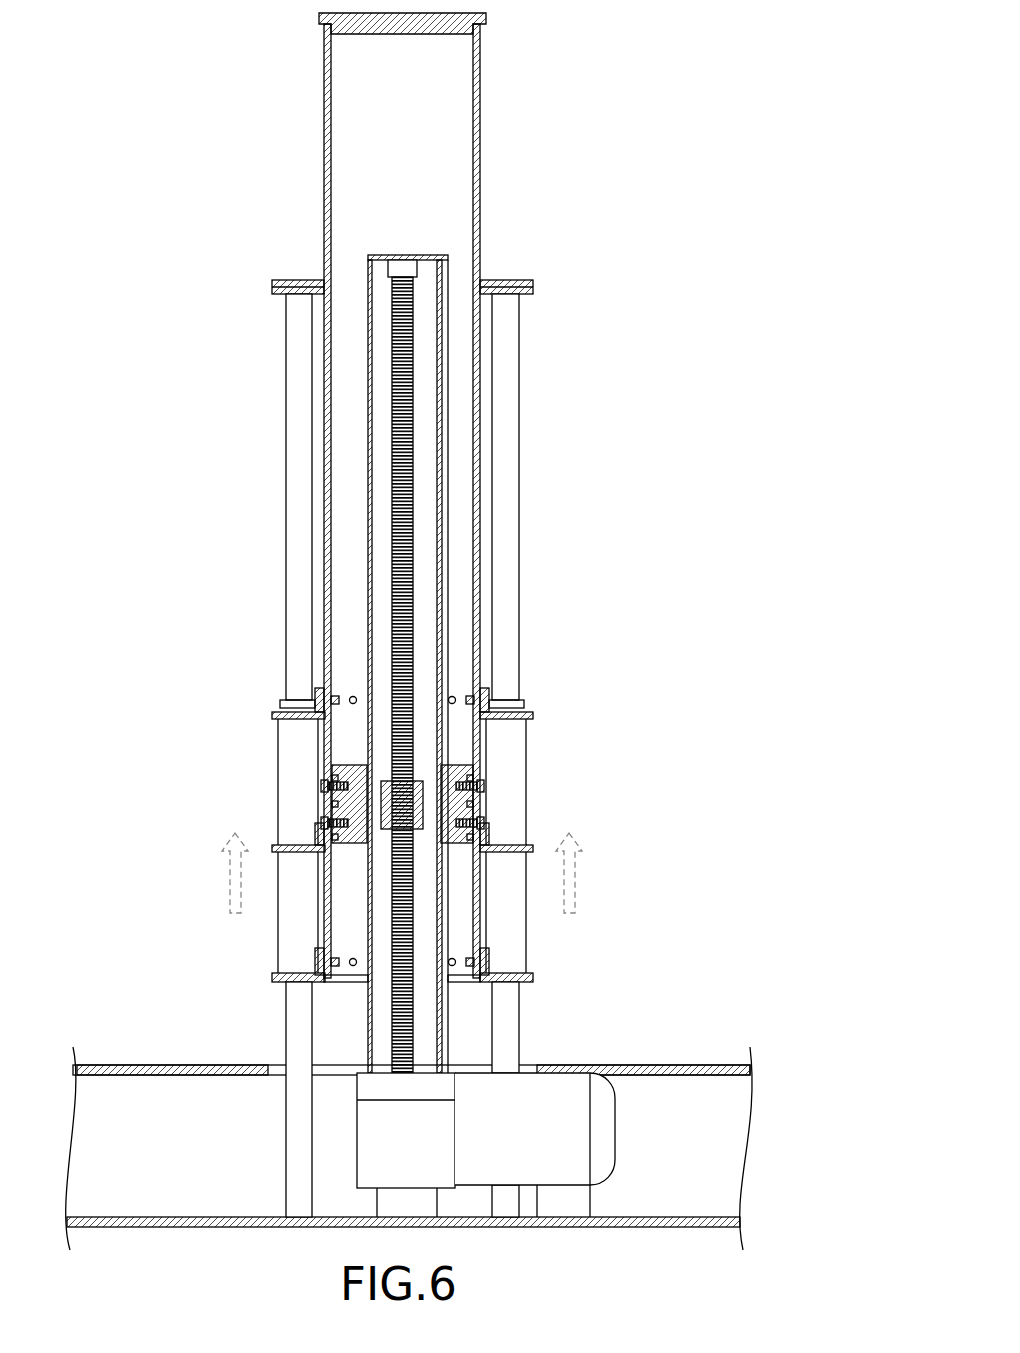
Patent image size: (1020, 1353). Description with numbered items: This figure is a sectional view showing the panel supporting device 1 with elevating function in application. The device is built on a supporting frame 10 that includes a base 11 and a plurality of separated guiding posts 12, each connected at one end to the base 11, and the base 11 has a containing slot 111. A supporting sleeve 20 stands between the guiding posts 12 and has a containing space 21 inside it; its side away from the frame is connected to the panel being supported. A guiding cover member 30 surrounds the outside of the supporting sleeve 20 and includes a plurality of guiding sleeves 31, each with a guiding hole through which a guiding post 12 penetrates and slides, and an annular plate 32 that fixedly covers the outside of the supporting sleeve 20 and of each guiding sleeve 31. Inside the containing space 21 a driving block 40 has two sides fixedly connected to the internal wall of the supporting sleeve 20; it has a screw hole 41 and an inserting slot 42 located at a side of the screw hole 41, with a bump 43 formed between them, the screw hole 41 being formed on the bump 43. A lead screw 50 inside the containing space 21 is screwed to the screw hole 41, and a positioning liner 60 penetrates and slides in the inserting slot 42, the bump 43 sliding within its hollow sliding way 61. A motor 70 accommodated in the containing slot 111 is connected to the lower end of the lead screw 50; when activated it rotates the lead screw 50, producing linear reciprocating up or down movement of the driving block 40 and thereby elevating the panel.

The panel supporting device 1 is at (115, 122).
The supporting frame 10 is at (442, 1100).
The base 11 is at (637, 1067).
The containing slot 111 is at (697, 1153).
The guiding post 12 is at (507, 622).
The supporting sleeve 20 is at (482, 163).
The containing space 21 is at (440, 222).
The guiding cover member 30 is at (529, 942).
The guiding sleeve 31 is at (513, 755).
The annular plate 32 is at (508, 847).
The driving block 40 is at (330, 756).
The screw hole 41 is at (390, 777).
The inserting slot 42 is at (317, 840).
The bump 43 is at (373, 808).
The lead screw 50 is at (402, 647).
The positioning liner 60 is at (441, 477).
The hollow sliding way 61 is at (425, 530).
The motor 70 is at (570, 1135).